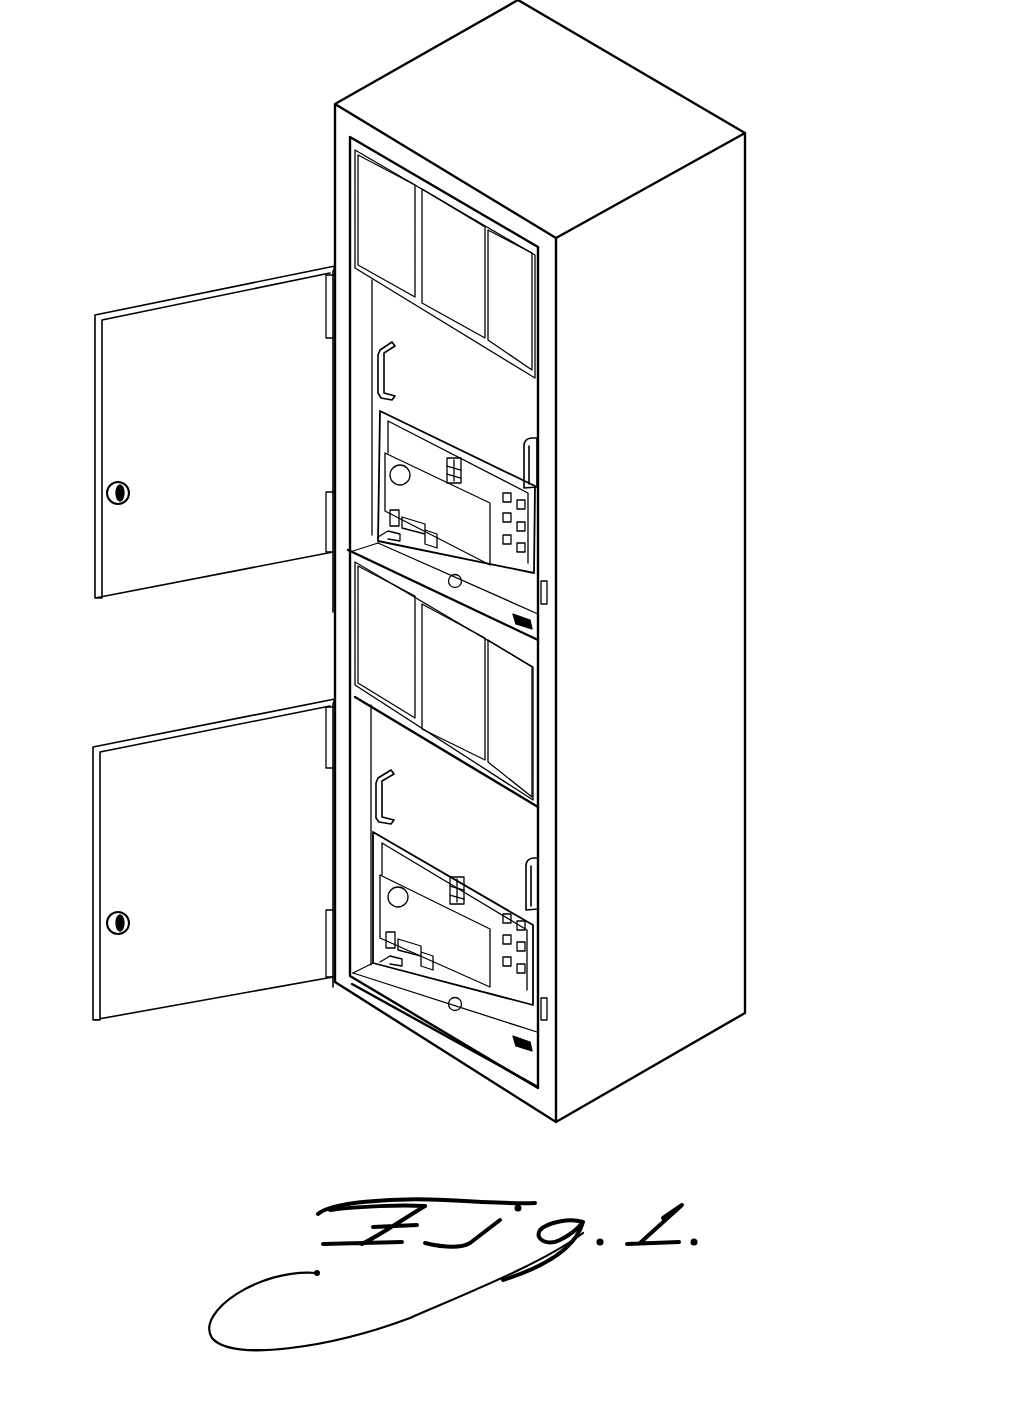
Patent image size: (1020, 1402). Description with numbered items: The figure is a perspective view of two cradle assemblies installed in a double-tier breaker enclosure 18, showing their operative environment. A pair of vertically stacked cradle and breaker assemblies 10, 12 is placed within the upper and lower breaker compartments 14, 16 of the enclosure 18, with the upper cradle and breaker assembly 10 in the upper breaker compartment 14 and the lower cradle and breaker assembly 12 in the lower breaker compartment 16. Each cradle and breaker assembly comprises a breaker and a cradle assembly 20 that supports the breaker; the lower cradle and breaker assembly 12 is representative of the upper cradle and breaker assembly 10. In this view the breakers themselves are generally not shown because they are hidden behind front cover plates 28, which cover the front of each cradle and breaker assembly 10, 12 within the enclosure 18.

The upper cradle and breaker assembly 10 is at (455, 458).
The lower cradle and breaker assembly 12 is at (465, 888).
The upper breaker compartment 14 is at (357, 950).
The lower breaker compartment 16 is at (357, 535).
The double-tier breaker enclosure 18 is at (747, 538).
The cradle assembly 20 is at (426, 562).
The front cover plates 28 is at (518, 519).